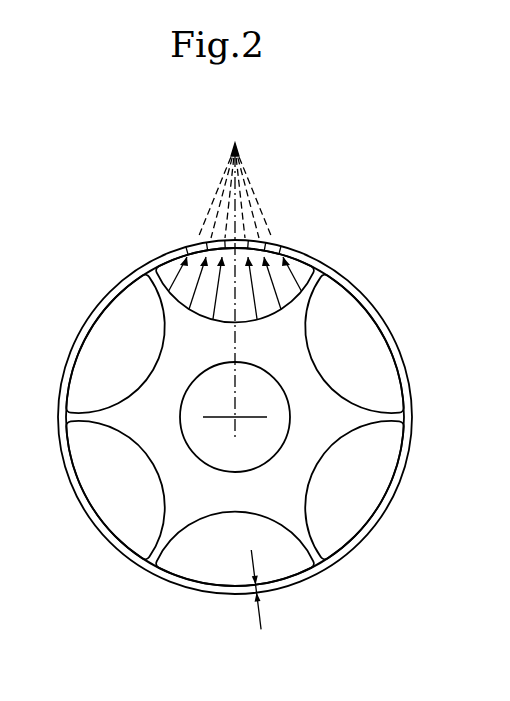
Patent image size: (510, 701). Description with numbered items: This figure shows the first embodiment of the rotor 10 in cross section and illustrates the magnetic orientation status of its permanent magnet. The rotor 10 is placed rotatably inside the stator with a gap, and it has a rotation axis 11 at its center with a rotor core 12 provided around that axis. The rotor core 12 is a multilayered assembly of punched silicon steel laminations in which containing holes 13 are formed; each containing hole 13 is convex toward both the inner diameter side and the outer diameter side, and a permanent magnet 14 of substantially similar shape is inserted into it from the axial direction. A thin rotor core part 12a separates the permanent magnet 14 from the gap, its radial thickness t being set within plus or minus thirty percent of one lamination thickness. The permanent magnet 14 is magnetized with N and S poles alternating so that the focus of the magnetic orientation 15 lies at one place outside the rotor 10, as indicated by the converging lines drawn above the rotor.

The rotor 10 is at (358, 287).
The rotation axis 11 is at (267, 400).
The rotor core 12 is at (303, 457).
The rotor core part 12a is at (221, 588).
The containing hole 13 is at (85, 481).
The permanent magnet 14 is at (107, 363).
The focus of the magnetic orientation 15 is at (213, 285).